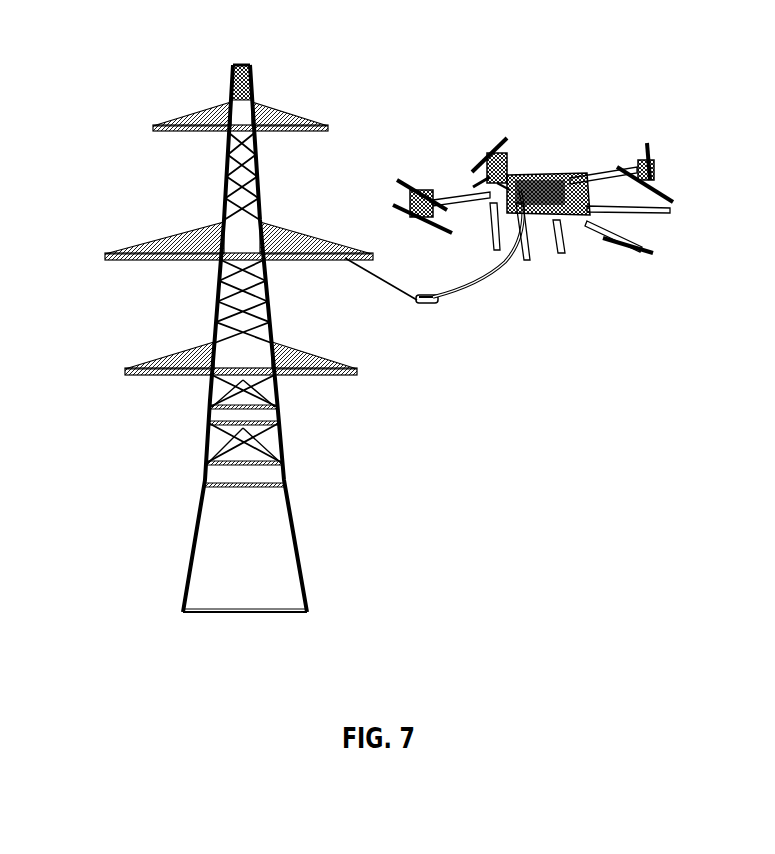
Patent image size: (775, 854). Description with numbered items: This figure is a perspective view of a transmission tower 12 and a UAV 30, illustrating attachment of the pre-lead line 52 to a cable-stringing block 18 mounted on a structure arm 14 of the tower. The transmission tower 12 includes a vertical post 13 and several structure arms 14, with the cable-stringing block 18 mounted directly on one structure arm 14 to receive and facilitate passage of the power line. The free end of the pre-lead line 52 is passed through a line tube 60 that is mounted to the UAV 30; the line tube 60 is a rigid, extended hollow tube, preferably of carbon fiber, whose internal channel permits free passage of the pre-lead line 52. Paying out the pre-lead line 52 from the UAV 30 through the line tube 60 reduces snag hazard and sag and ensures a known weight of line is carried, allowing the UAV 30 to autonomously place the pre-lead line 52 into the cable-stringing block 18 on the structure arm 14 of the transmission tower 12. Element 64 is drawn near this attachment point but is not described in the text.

The transmission tower 12 is at (232, 93).
The vertical post 13 is at (283, 461).
The structure arm 14 is at (277, 113).
The cable-stringing block 18 is at (352, 263).
The UAV 30 is at (653, 155).
The pre-lead line 52 is at (418, 301).
The line tube 60 is at (513, 273).
The connector 64 is at (435, 297).